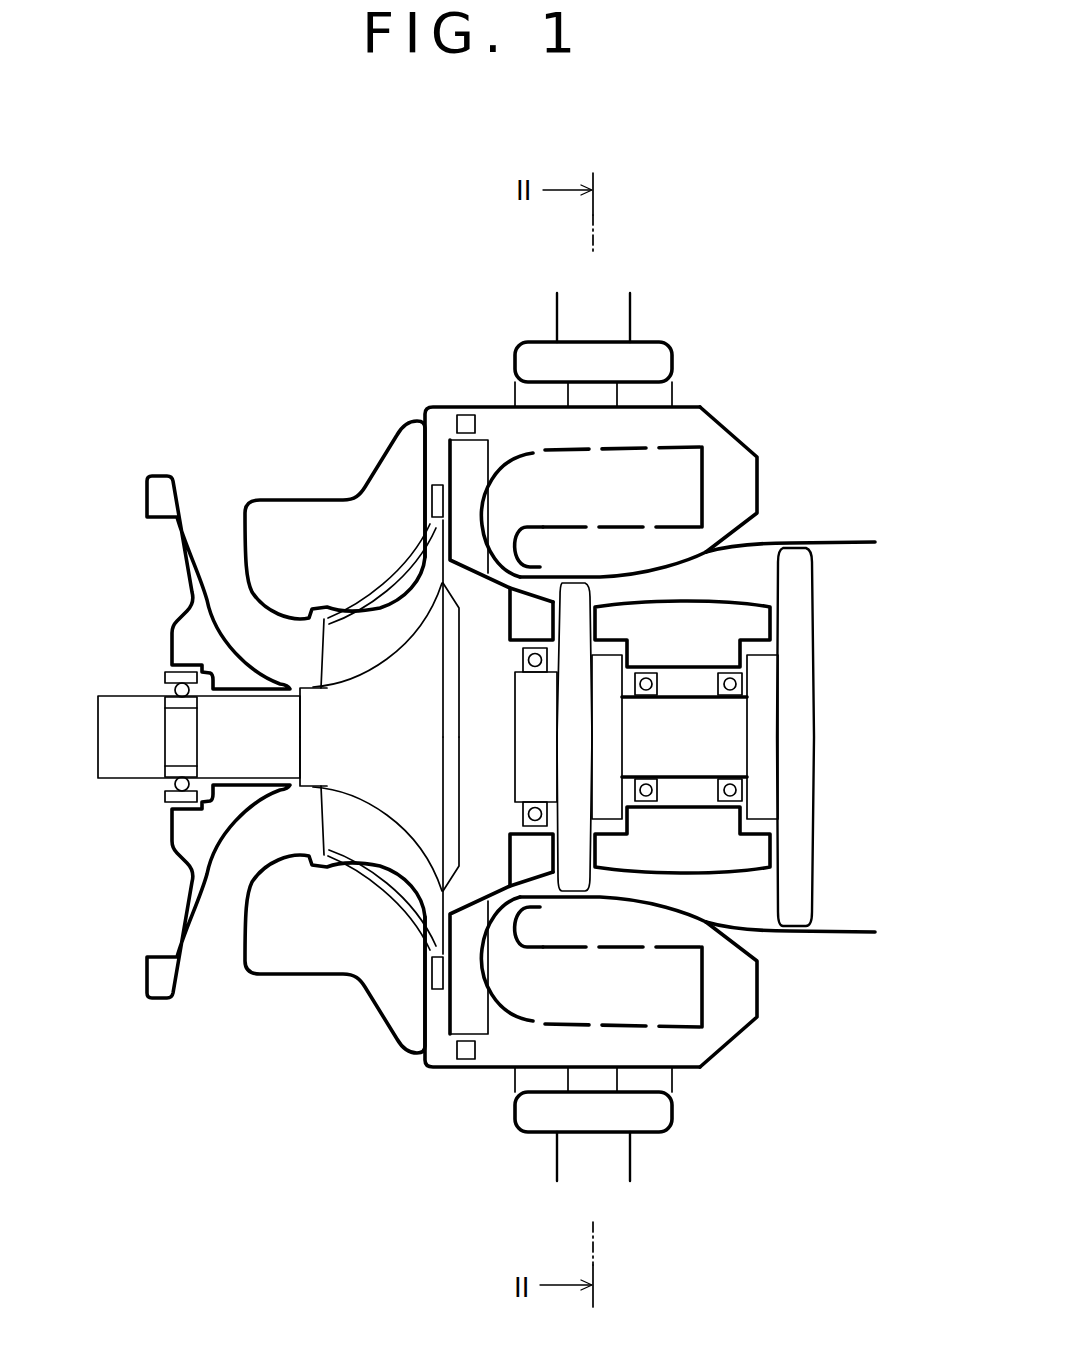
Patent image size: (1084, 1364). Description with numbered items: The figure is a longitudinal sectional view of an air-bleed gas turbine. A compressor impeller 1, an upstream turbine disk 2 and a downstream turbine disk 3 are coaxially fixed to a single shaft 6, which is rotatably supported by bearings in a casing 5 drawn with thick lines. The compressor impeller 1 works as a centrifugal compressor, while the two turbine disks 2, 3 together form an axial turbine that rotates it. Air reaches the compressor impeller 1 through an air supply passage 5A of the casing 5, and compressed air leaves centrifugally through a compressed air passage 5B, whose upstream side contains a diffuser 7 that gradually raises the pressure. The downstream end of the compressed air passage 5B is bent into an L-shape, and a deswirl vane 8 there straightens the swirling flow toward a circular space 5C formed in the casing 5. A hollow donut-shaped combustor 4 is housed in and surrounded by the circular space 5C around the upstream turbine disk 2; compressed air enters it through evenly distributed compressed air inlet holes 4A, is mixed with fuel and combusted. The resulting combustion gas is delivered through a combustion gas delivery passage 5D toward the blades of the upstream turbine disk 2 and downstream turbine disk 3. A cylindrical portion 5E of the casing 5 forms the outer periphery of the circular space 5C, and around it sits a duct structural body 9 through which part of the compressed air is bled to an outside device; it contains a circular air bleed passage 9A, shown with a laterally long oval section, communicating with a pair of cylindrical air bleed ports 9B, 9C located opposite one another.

The compressor impeller 1 is at (313, 821).
The upstream turbine disk 2 is at (593, 731).
The downstream turbine disk 3 is at (814, 766).
The combustor 4 is at (718, 488).
The compressed air inlet holes 4A is at (647, 447).
The casing 5 is at (296, 496).
The air supply passage 5A is at (217, 563).
The compressed air passage 5B is at (437, 478).
The circular space 5C is at (728, 462).
The combustion gas delivery passage 5D is at (688, 585).
The cylindrical portion 5E is at (650, 407).
The shaft 6 is at (133, 696).
The diffuser 7 is at (437, 454).
The deswirl vane 8 is at (455, 424).
The duct structural body 9 is at (548, 337).
The circular air bleed passage 9A is at (597, 362).
The air bleed port 9B is at (628, 318).
The air bleed port 9C is at (628, 1165).